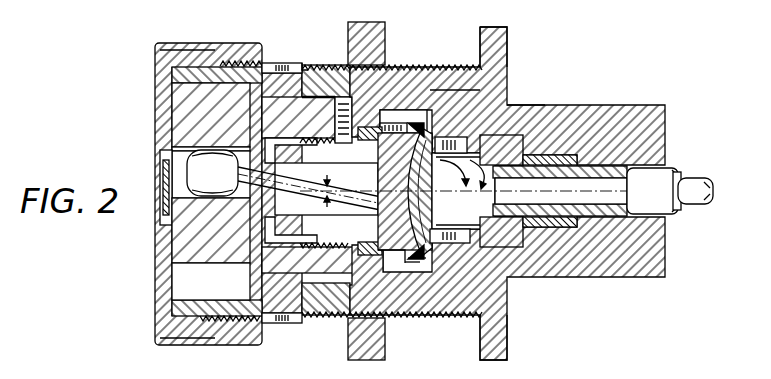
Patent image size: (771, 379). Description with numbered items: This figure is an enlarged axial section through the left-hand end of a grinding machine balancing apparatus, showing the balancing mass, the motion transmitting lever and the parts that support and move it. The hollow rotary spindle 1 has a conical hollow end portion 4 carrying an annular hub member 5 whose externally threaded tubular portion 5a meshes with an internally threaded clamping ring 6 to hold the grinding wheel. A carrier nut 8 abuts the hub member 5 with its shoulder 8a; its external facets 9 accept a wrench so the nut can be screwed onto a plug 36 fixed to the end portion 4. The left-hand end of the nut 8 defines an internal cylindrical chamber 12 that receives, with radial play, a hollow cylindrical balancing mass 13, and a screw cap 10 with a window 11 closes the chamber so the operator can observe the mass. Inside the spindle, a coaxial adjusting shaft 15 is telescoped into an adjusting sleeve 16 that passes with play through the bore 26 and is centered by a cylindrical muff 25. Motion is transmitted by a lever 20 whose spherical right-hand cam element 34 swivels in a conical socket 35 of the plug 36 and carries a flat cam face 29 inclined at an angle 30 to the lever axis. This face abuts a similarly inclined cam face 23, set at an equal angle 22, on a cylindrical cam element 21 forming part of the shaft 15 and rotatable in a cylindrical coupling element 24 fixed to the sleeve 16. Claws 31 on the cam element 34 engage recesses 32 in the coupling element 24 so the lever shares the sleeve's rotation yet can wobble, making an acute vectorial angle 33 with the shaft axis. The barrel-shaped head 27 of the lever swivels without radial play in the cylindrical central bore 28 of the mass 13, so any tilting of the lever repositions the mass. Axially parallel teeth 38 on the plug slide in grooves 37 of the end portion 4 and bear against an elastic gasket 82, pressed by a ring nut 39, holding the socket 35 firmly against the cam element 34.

The hollow rotary spindle 1 is at (637, 268).
The hollow end portion 4 is at (514, 105).
The annular hub member 5 is at (508, 47).
The externally threaded tubular portion 5a is at (434, 84).
The internally threaded clamping ring 6 is at (378, 30).
The nut 8 is at (262, 62).
The shoulder 8a is at (304, 63).
The external facets 9 is at (289, 64).
The screw cap 10 is at (168, 60).
The window 11 is at (162, 214).
The internal cylindrical chamber 12 is at (185, 281).
The balancing mass 13 is at (183, 110).
The adjusting shaft 15 is at (703, 178).
The adjusting sleeve 16 is at (681, 172).
The lever 20 is at (326, 189).
The cylindrical cam element 21 is at (483, 188).
The angle 22 is at (463, 191).
The cam face 23 is at (453, 187).
The cylindrical coupling element 24 is at (510, 143).
The cylindrical muff 25 is at (565, 155).
The bore 26 is at (641, 170).
The head 27 is at (200, 176).
The cylindrical central bore 28 is at (183, 152).
The cam face 29 is at (415, 259).
The angle 30 is at (401, 185).
The claw 31 is at (458, 137).
The recess 32 is at (481, 174).
The acute vectorial angle 33 is at (318, 189).
The cam element 34 is at (408, 196).
The conical socket 35 is at (341, 188).
The plug 36 is at (317, 150).
The grooves 37 is at (374, 124).
The peripheral teeth 38 is at (405, 128).
The ring nut 39 is at (379, 263).
The elastic gasket 82 is at (408, 263).